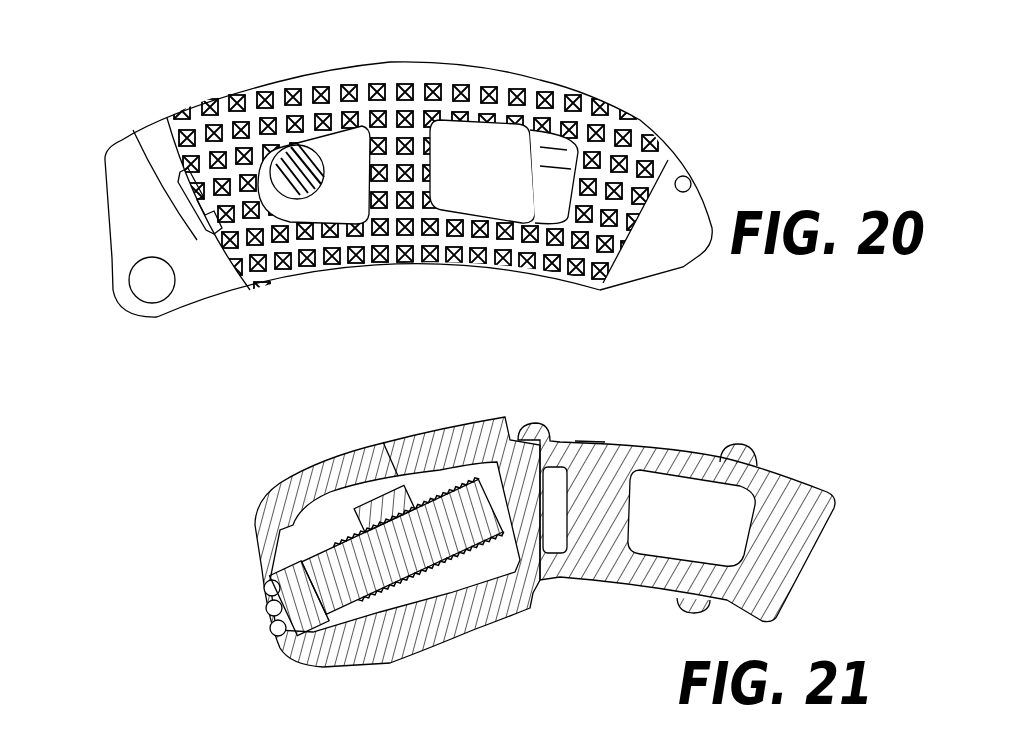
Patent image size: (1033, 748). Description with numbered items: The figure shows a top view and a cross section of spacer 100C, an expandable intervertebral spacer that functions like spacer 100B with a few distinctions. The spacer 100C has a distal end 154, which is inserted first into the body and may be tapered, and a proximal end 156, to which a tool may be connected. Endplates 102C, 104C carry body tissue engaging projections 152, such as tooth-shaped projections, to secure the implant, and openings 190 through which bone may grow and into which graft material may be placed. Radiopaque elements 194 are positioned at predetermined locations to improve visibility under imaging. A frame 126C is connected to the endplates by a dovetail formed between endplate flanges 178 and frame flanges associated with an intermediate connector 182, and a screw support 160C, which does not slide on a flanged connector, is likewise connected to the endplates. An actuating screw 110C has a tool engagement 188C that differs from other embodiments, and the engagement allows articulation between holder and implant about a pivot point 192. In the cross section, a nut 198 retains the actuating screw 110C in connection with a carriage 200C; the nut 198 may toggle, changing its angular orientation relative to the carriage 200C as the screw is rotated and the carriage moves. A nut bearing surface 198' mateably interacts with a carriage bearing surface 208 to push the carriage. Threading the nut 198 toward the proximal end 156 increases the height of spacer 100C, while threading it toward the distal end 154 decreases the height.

In FIG. 20, the spacer 100C is at (686, 84).
In FIG. 21, the spacer 100B is at (799, 408).
In FIG. 20, the endplate 102C is at (540, 83).
In FIG. 21, the endplate 104C is at (660, 435).
In FIG. 20, the actuating screw 110C is at (325, 135).
In FIG. 21, the actuating screw 110C is at (484, 440).
In FIG. 20, the frame 126C is at (168, 312).
In FIG. 21, the frame 126C is at (298, 465).
In FIG. 20, the body tissue engaging projections 152 is at (550, 280).
In FIG. 20, the distal end 154 is at (727, 167).
In FIG. 20, the proximal end 156 is at (184, 104).
In FIG. 20, the screw support 160C is at (122, 258).
In FIG. 20, the endplate flange 178 is at (162, 142).
In FIG. 20, the intermediate connector 182 is at (175, 153).
In FIG. 21, the tool engagement 188C is at (293, 617).
In FIG. 20, the openings 190 is at (472, 145).
In FIG. 20, the pivot point 192 is at (160, 281).
In FIG. 20, the radiopaque elements 194 is at (270, 248).
In FIG. 20, the nut 198 is at (273, 112).
In FIG. 21, the nut 198 is at (352, 479).
In FIG. 21, the nut bearing surface 198' is at (360, 440).
In FIG. 21, the carriage 200C is at (593, 440).
In FIG. 21, the carriage bearing surface 208 is at (383, 442).